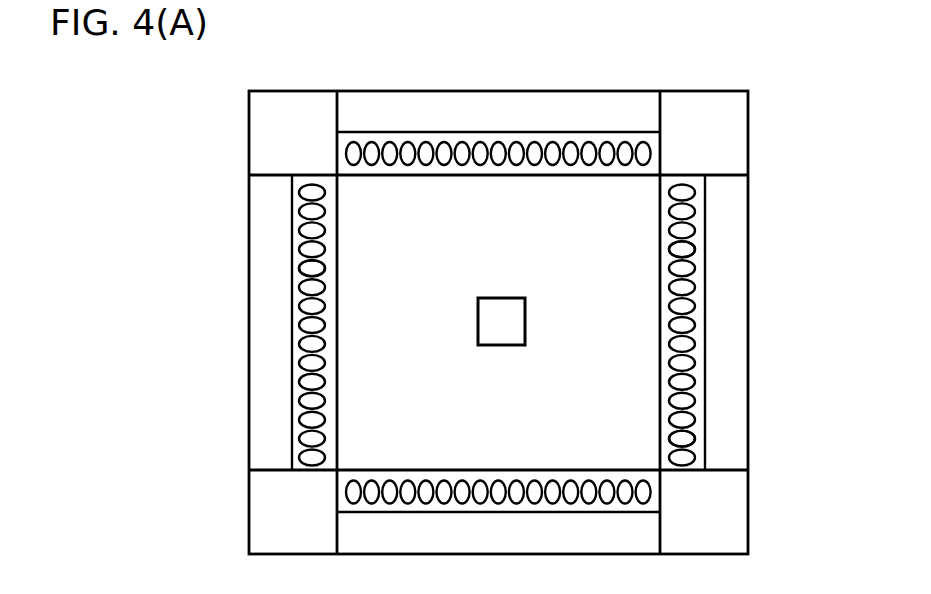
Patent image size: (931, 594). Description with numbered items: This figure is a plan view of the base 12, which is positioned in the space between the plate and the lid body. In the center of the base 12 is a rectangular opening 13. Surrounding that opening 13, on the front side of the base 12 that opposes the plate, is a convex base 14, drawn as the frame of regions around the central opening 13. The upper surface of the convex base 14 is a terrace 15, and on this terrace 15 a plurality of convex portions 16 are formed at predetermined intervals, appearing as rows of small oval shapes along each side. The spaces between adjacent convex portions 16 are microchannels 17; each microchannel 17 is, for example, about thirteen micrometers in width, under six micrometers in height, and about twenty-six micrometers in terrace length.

The base 12 is at (488, 115).
The opening 13 is at (497, 315).
The convex base 14 is at (705, 325).
The terrace 15 is at (330, 331).
The convex portion 16 is at (678, 438).
The microchannel 17 is at (302, 279).